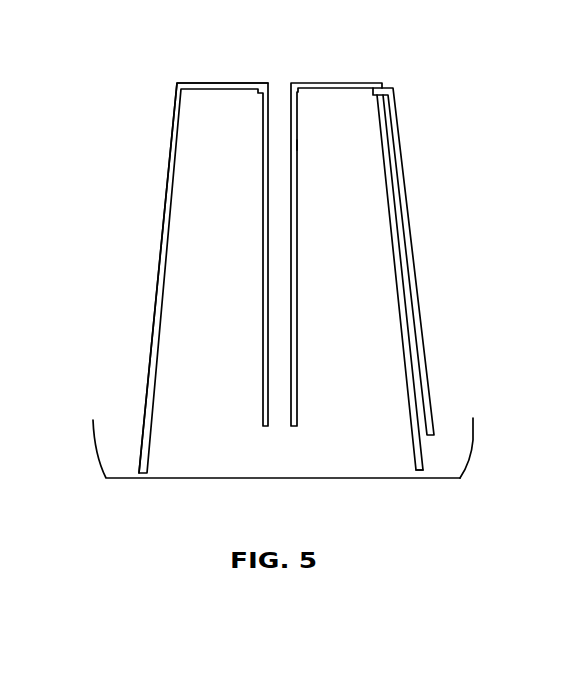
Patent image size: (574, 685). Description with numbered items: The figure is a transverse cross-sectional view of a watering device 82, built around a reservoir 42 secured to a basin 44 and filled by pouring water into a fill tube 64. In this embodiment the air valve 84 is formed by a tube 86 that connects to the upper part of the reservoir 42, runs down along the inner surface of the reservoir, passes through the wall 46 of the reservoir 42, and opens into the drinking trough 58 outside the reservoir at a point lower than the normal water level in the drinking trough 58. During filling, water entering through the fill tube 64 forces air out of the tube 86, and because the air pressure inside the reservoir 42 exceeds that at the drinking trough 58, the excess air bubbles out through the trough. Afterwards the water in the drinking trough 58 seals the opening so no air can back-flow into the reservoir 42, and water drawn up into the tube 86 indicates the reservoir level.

The reservoir 42 is at (162, 232).
The basin 44 is at (95, 440).
The wall 46 is at (412, 435).
The drinking trough 58 is at (450, 435).
The fill tube 64 is at (297, 146).
The watering device 82 is at (118, 77).
The air valve 84 is at (392, 88).
The tube 86 is at (408, 207).